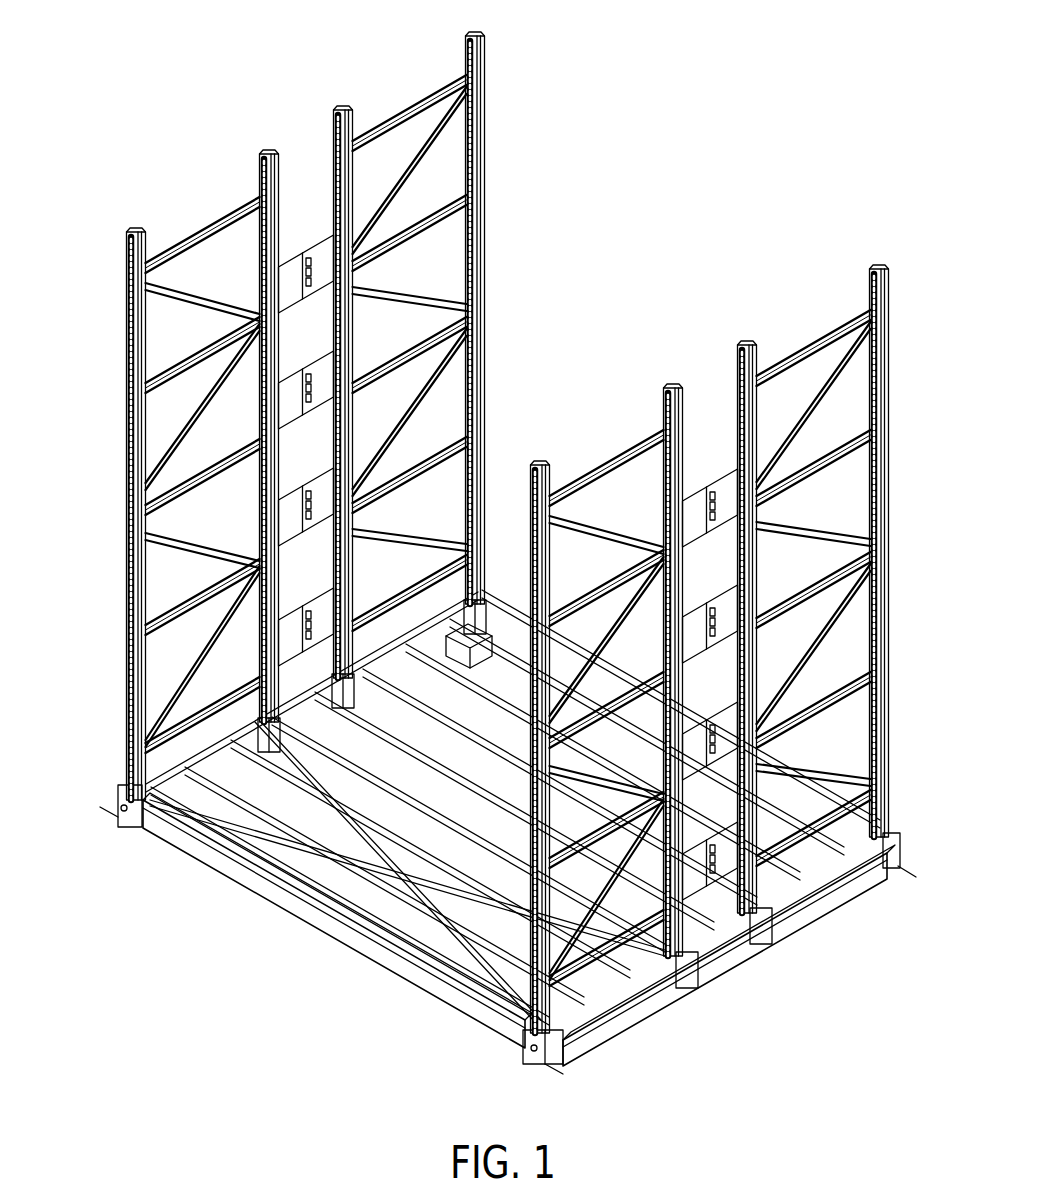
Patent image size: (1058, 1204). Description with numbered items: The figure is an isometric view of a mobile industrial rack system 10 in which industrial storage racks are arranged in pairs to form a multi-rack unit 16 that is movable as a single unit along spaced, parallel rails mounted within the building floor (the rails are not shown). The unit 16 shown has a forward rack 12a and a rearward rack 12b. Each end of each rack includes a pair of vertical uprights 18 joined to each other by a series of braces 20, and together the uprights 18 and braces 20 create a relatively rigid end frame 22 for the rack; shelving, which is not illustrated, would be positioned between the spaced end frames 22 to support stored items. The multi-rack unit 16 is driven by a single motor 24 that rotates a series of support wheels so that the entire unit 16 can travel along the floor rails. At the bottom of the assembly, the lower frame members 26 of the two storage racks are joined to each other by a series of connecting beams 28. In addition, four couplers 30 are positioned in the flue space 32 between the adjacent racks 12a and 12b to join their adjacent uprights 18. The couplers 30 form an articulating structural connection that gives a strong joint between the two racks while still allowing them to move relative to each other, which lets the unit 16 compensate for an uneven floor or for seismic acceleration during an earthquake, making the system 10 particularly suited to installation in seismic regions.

The mobile industrial rack system 10 is at (689, 126).
The forward rack 12a is at (892, 606).
The rearward rack 12b is at (124, 714).
The multi-rack unit 16 is at (726, 978).
The vertical upright 18 is at (661, 410).
The brace 20 is at (813, 338).
The end frame 22 is at (516, 230).
The motor 24 is at (483, 598).
The lower frame member 26 is at (624, 1012).
The connecting beam 28 is at (730, 947).
The coupler 30 is at (693, 508).
The flue space 32 is at (708, 410).